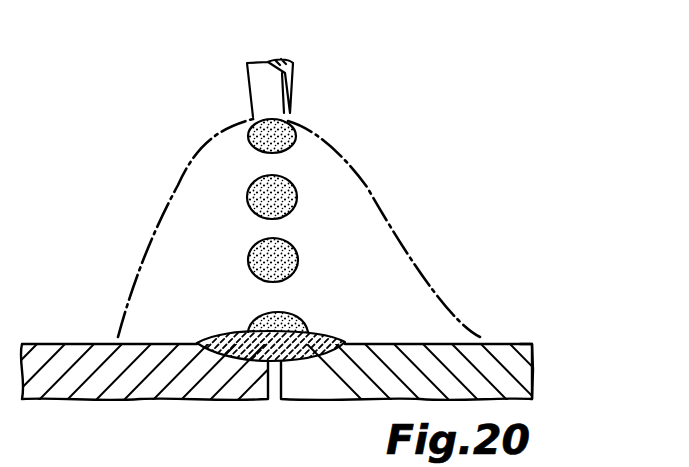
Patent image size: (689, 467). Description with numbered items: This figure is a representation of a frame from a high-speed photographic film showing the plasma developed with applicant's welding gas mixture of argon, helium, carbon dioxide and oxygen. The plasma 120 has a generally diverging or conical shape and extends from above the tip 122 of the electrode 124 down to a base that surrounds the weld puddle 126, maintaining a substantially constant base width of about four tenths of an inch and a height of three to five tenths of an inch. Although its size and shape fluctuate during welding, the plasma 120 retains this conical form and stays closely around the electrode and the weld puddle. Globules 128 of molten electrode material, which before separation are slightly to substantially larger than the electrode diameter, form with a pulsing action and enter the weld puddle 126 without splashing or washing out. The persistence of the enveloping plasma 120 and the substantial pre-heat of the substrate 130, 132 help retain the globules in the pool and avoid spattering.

The plasma 120 is at (170, 188).
The tip 122 is at (293, 140).
The electrode 124 is at (262, 81).
The weld puddle 126 is at (218, 332).
The globules 128 is at (287, 314).
The substrate 130 is at (132, 390).
The substrate 132 is at (512, 360).